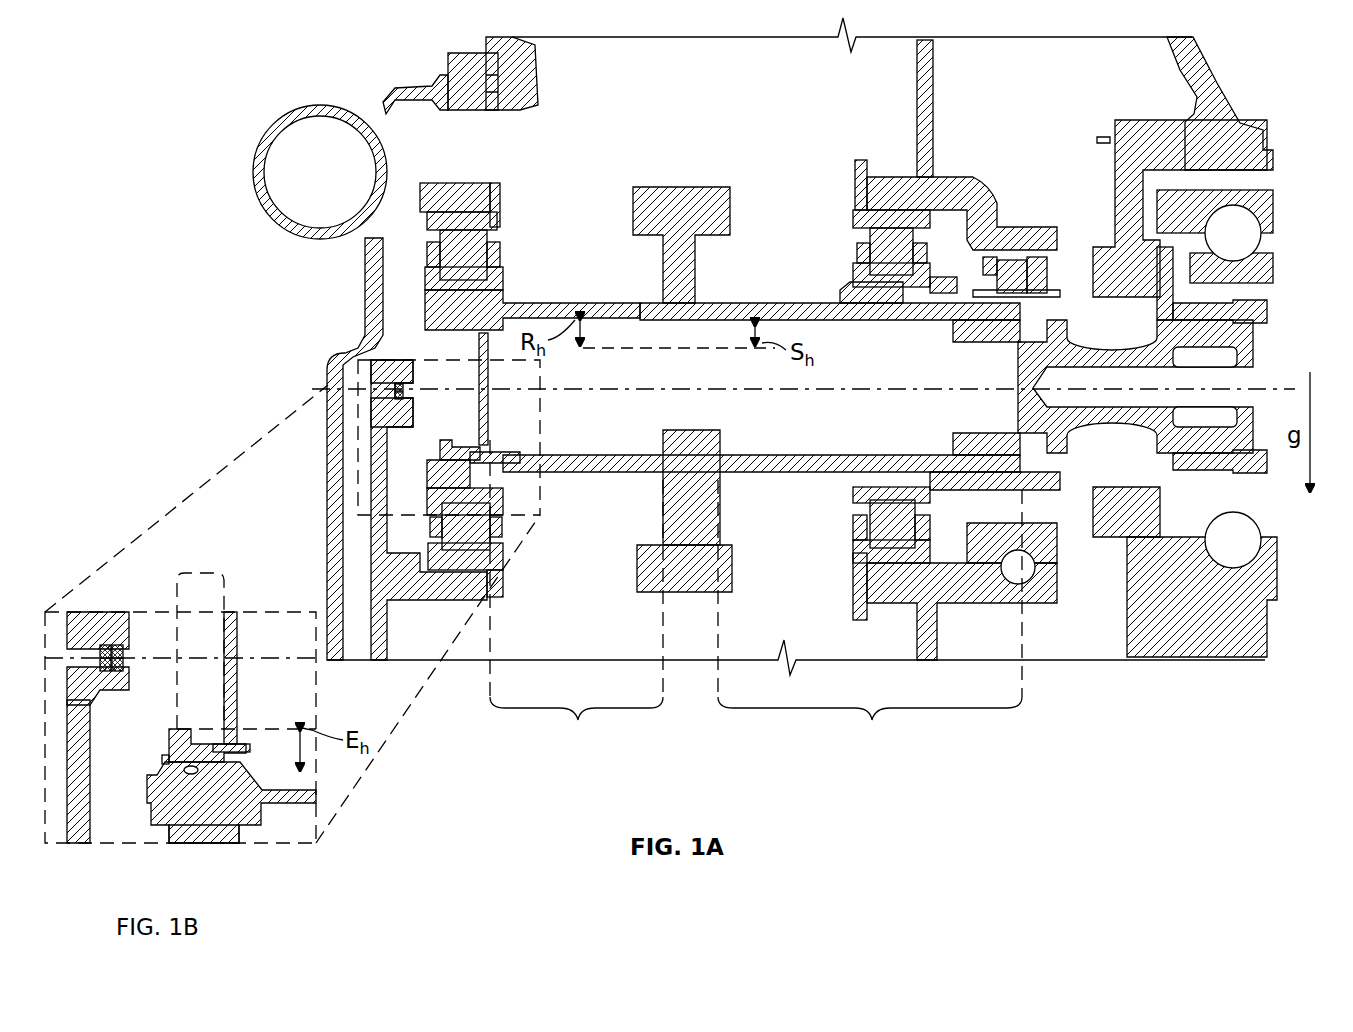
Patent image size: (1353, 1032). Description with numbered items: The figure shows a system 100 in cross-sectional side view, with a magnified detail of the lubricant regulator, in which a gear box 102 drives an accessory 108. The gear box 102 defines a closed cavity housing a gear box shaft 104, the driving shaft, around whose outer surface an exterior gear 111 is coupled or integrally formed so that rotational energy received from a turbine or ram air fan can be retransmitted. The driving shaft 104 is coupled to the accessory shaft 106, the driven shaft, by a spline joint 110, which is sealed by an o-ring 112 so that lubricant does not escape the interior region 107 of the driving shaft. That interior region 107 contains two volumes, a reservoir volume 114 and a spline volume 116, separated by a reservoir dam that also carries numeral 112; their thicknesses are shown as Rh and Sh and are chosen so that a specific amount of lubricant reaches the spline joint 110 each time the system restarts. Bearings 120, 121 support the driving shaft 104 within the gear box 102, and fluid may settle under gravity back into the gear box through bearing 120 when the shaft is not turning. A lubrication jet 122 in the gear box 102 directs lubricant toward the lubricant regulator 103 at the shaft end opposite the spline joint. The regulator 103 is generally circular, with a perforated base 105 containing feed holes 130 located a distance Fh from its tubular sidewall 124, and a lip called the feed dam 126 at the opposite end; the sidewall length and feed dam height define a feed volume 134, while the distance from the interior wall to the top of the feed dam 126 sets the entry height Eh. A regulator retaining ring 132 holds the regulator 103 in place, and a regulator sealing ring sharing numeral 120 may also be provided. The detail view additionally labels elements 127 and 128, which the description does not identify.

In FIG. 1A, the system 100 is at (312, 54).
In FIG. 1A, the gear box 102 is at (327, 423).
In FIG. 1B, the gear box 102 is at (90, 825).
In FIG. 1A, the lubricant regulator 103 is at (420, 340).
In FIG. 1A, the gear box shaft 104 is at (780, 302).
In FIG. 1B, the gear box shaft 104 is at (255, 815).
In FIG. 1A, the perforated base 105 is at (490, 410).
In FIG. 1B, the perforated base 105 is at (238, 703).
In FIG. 1A, the accessory shaft 106 is at (1262, 340).
In FIG. 1A, the interior region 107 is at (908, 437).
In FIG. 1A, the accessory 108 is at (1150, 118).
In FIG. 1A, the spline joint 110 is at (987, 342).
In FIG. 1A, the exterior gear 111 is at (680, 187).
In FIG. 1A, the o-ring 112 is at (640, 349).
In FIG. 1A, the reservoir volume 114 is at (578, 722).
In FIG. 1A, the spline volume 116 is at (872, 722).
In FIG. 1A, the bearing 120 is at (490, 545).
In FIG. 1A, the bearing 121 is at (885, 235).
In FIG. 1A, the lubrication jet 122 is at (372, 372).
In FIG. 1B, the lubrication jet 122 is at (98, 640).
In FIG. 1A, the tubular sidewall 124 is at (447, 440).
In FIG. 1B, the tubular sidewall 124 is at (188, 735).
In FIG. 1A, the feed dam 126 is at (440, 465).
In FIG. 1B, the feed dam 126 is at (162, 758).
In FIG. 1A, the bearing 127 is at (853, 540).
In FIG. 1B, the seal body 128 is at (160, 782).
In FIG. 1B, the feed holes 130 is at (246, 745).
In FIG. 1B, the regulator retaining ring 132 is at (184, 771).
In FIG. 1B, the feed volume 134 is at (200, 573).